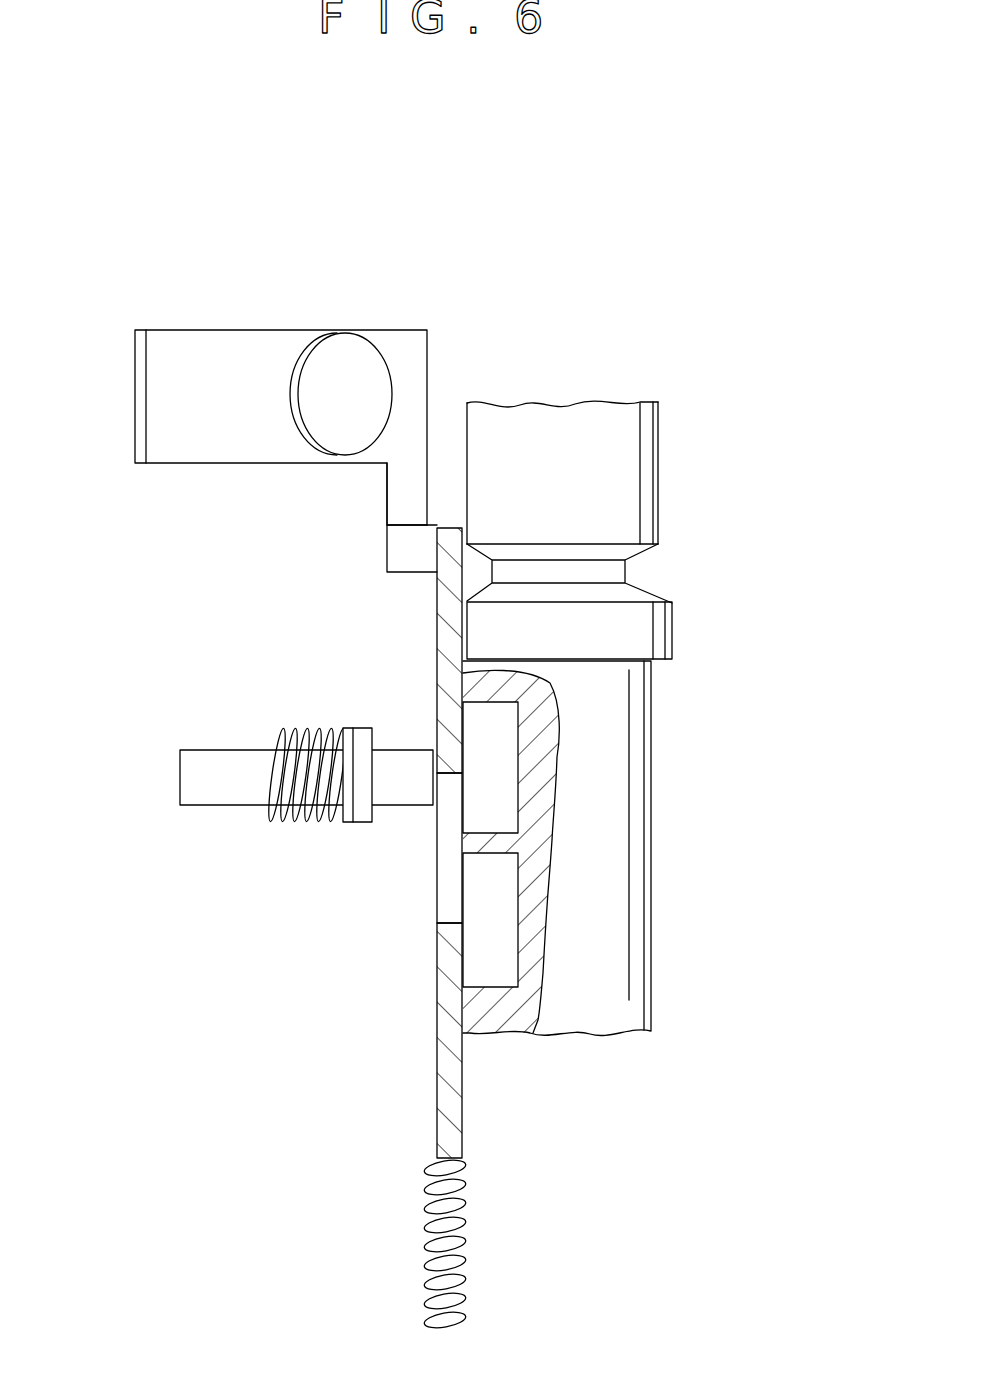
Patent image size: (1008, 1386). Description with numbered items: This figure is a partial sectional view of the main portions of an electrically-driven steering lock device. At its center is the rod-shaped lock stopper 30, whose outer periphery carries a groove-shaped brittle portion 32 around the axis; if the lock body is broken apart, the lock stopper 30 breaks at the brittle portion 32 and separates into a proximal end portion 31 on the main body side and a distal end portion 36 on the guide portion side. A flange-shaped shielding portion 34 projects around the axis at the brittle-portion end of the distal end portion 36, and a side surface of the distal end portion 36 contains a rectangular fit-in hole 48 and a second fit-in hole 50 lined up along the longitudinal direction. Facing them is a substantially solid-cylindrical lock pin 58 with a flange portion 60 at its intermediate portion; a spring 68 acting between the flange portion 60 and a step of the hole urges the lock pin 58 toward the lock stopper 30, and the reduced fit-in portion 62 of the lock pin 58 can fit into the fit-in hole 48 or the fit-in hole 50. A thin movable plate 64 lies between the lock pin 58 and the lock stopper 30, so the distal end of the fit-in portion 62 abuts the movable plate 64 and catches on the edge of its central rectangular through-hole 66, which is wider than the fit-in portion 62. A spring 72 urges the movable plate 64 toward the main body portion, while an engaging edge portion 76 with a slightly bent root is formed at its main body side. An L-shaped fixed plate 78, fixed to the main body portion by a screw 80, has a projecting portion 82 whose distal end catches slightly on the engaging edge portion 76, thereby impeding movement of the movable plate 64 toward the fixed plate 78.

The lock stopper 30 is at (669, 429).
The proximal end portion 31 is at (660, 512).
The brittle portion 32 is at (612, 568).
The shielding portion 34 is at (663, 632).
The distal end portion 36 is at (605, 850).
The fit-in hole 48 is at (503, 748).
The fit-in hole 50 is at (502, 893).
The lock pin 58 is at (208, 745).
The flange portion 60 is at (362, 807).
The fit-in portion 62 is at (415, 747).
The movable plate 64 is at (432, 1075).
The through-hole 66 is at (445, 920).
The spring 68 is at (302, 730).
The spring 72 is at (425, 1228).
The engaging edge portion 76 is at (400, 548).
The fixed plate 78 is at (190, 326).
The screw 80 is at (346, 352).
The projecting portion 82 is at (397, 482).